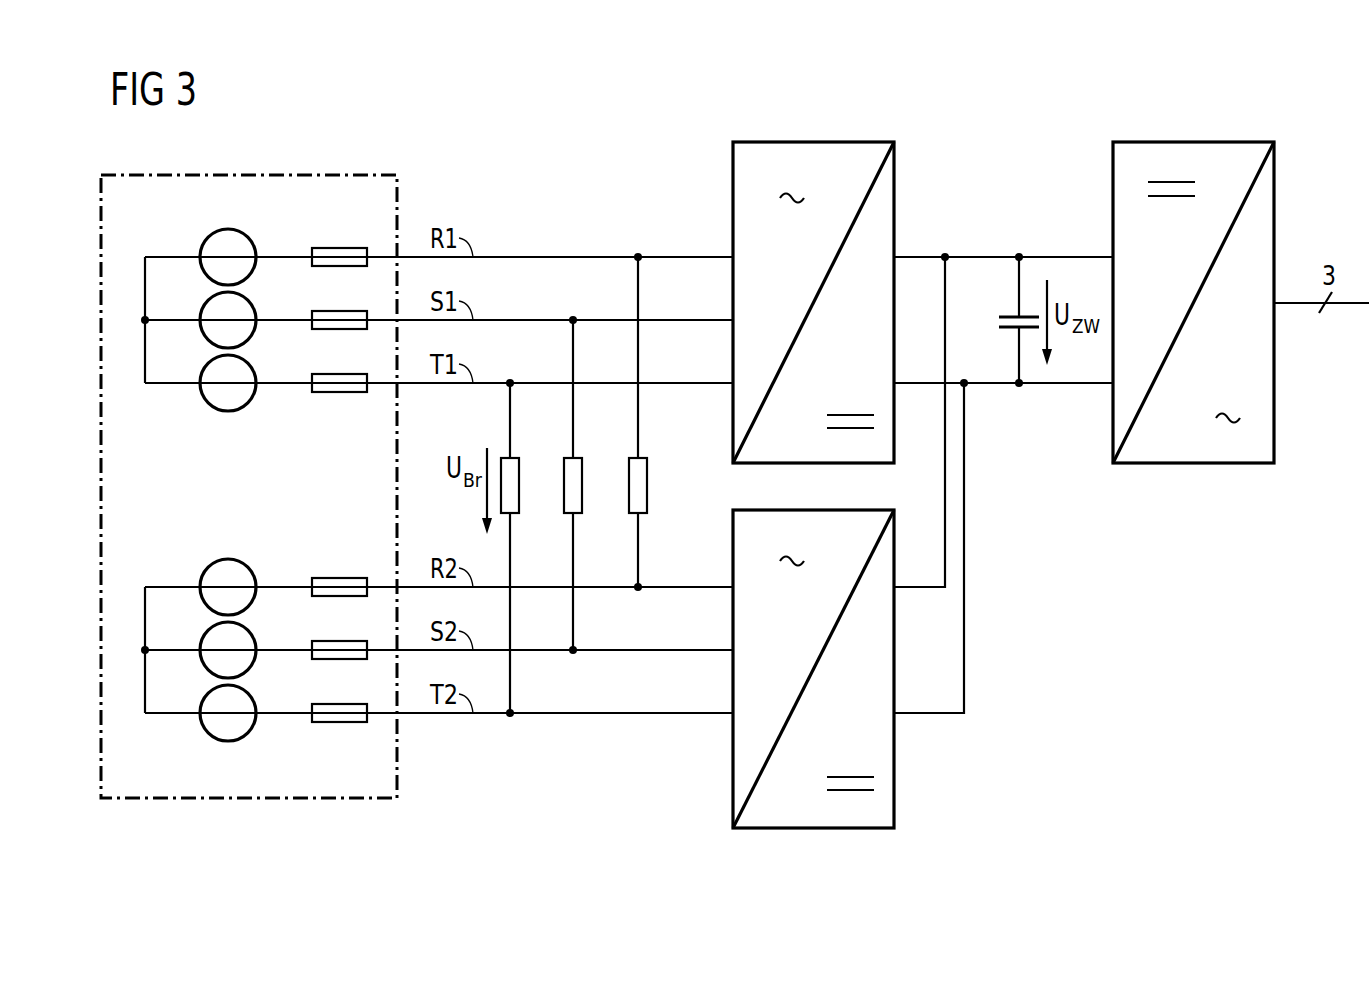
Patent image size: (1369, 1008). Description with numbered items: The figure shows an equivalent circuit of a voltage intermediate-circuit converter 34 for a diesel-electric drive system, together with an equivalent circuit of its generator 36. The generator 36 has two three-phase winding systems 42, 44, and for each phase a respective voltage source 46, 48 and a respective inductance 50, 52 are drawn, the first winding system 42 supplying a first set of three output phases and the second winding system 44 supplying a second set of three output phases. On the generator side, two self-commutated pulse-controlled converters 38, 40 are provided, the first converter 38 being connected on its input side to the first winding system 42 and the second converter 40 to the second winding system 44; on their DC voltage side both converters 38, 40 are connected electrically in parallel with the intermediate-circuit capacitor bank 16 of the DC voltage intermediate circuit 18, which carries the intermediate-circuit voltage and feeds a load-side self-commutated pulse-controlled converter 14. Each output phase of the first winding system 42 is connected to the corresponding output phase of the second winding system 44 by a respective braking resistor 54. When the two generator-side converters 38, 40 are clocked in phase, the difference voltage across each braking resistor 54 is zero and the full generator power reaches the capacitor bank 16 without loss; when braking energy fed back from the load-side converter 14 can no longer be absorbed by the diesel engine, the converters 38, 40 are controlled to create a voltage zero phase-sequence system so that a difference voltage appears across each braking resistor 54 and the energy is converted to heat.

The load-side self-commutated pulse-controlled converter 14 is at (1213, 142).
The intermediate-circuit capacitor bank 16 is at (1013, 315).
The DC voltage intermediate circuit 18 is at (1023, 278).
The voltage intermediate-circuit converter 34 is at (1046, 537).
The generator 36 is at (257, 800).
The self-commutated pulse-controlled converter 38 is at (838, 142).
The self-commutated pulse-controlled converter 40 is at (836, 828).
The three-phase winding system 42 is at (284, 363).
The three-phase winding system 44 is at (284, 690).
The voltage source 46 is at (207, 240).
The voltage source 48 is at (207, 568).
The inductance 50 is at (357, 248).
The inductance 52 is at (357, 578).
The braking resistor 54 is at (648, 489).